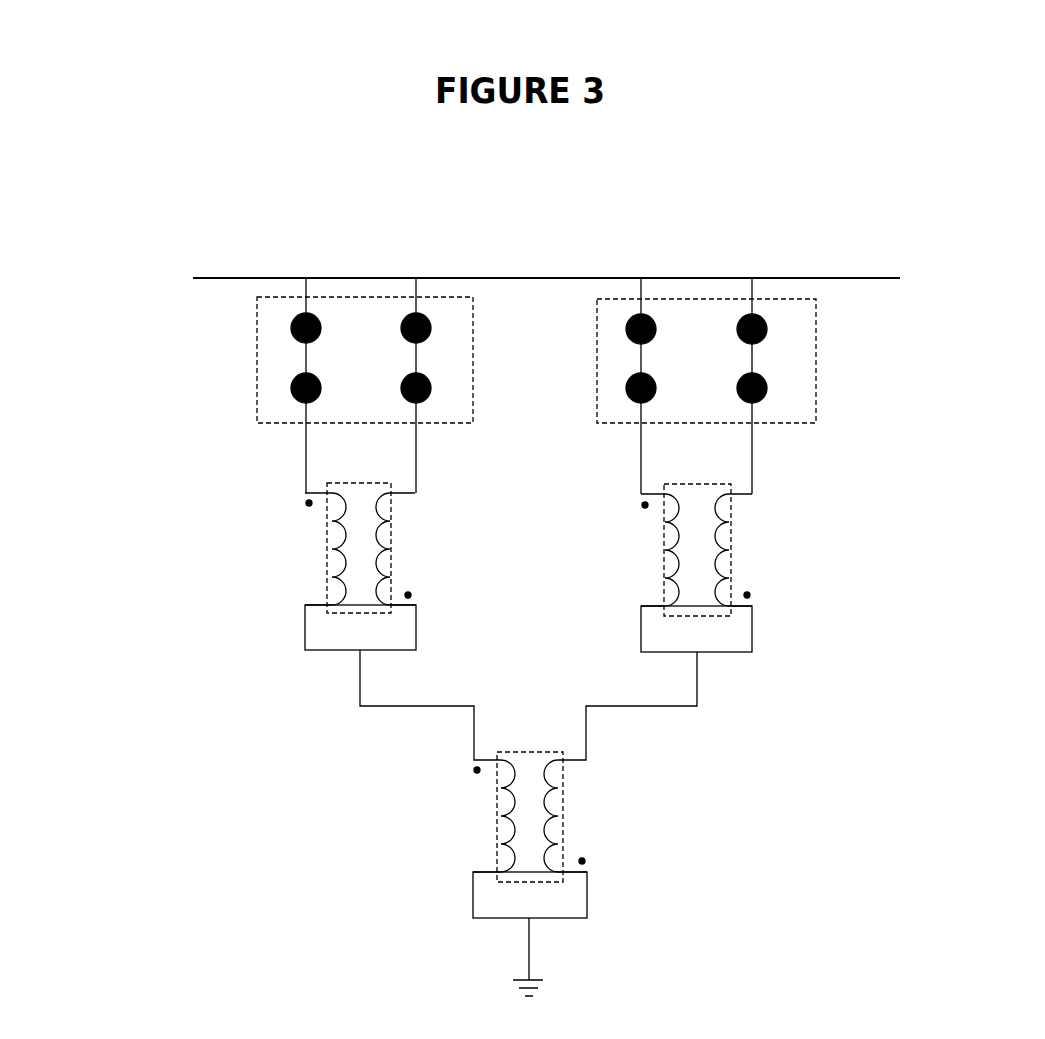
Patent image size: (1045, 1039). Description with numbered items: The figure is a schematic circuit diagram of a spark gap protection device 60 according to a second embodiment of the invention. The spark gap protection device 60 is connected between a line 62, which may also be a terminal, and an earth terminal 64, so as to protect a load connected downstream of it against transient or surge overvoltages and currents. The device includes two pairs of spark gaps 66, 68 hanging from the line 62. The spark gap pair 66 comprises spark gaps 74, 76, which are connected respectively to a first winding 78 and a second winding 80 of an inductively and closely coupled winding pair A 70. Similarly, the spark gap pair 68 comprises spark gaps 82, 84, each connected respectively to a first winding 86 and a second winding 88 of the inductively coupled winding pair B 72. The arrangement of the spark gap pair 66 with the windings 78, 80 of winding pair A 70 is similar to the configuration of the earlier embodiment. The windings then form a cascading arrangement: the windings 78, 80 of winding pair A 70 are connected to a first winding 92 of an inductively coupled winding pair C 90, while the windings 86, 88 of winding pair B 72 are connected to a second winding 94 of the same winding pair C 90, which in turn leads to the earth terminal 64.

The spark gap protection device 60 is at (152, 235).
The line 62 is at (370, 278).
The earth terminal 64 is at (540, 980).
The spark gap pair 66 is at (257, 359).
The spark gap pair 68 is at (816, 360).
The winding pair A 70 is at (360, 612).
The winding pair B 72 is at (697, 615).
The spark gap 74 is at (323, 385).
The spark gap 76 is at (434, 385).
The first winding 78 is at (298, 557).
The second winding 80 is at (417, 548).
The spark gap 82 is at (654, 386).
The spark gap 84 is at (770, 386).
The first winding 86 is at (652, 557).
The second winding 88 is at (745, 550).
The winding pair C 90 is at (530, 882).
The first winding 92 is at (474, 817).
The second winding 94 is at (587, 817).